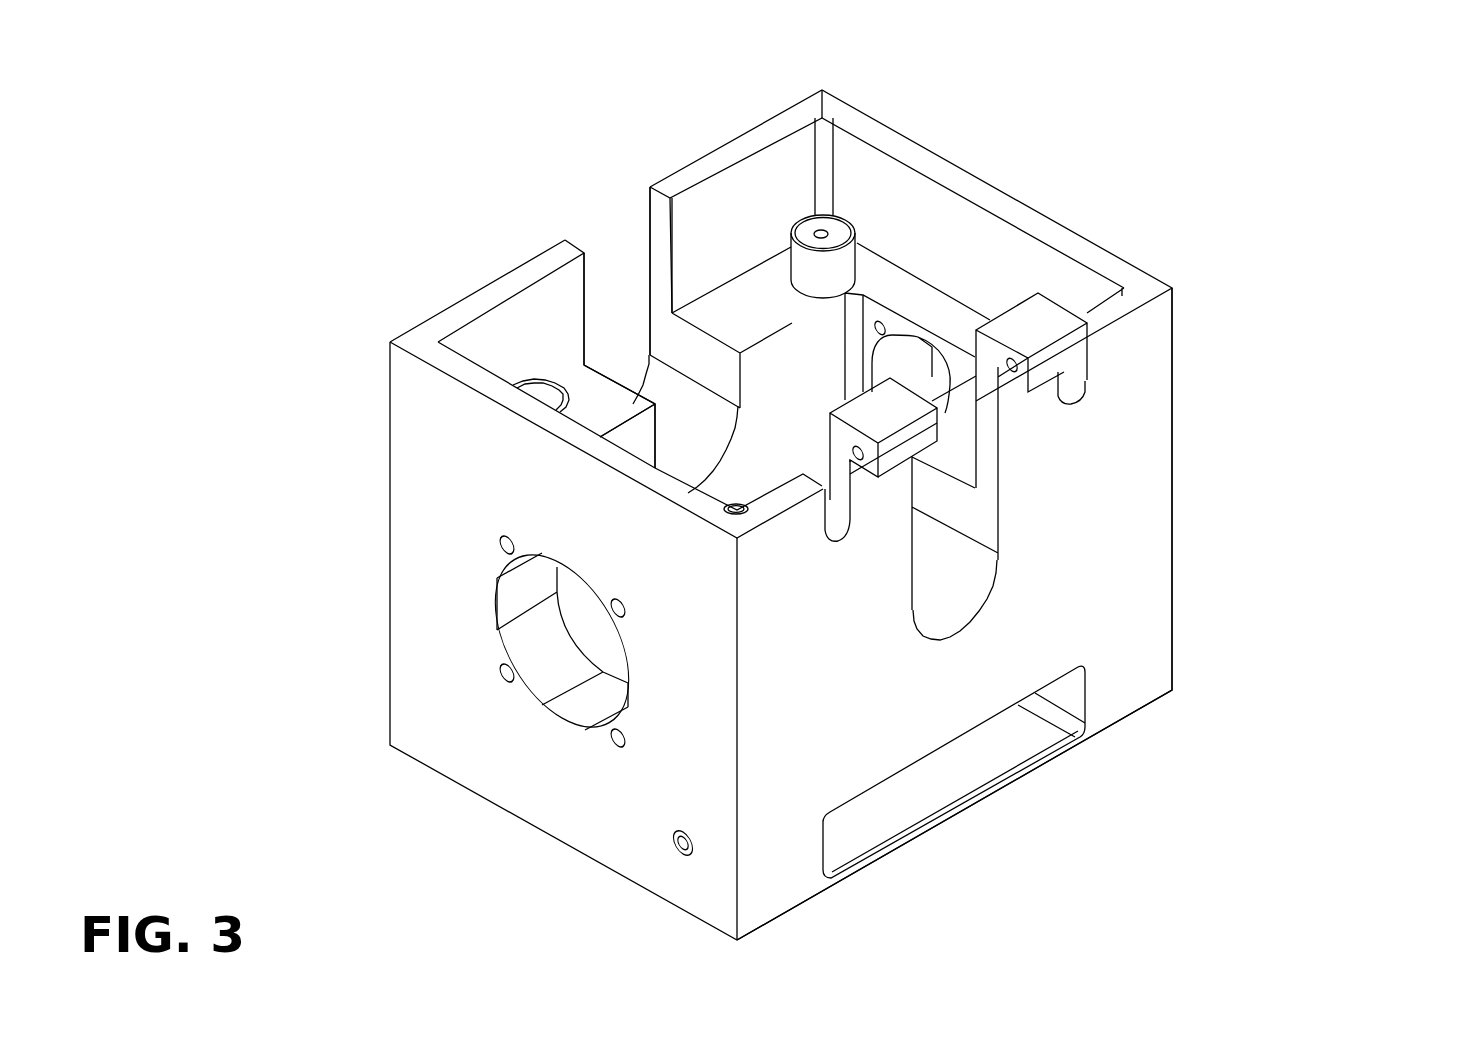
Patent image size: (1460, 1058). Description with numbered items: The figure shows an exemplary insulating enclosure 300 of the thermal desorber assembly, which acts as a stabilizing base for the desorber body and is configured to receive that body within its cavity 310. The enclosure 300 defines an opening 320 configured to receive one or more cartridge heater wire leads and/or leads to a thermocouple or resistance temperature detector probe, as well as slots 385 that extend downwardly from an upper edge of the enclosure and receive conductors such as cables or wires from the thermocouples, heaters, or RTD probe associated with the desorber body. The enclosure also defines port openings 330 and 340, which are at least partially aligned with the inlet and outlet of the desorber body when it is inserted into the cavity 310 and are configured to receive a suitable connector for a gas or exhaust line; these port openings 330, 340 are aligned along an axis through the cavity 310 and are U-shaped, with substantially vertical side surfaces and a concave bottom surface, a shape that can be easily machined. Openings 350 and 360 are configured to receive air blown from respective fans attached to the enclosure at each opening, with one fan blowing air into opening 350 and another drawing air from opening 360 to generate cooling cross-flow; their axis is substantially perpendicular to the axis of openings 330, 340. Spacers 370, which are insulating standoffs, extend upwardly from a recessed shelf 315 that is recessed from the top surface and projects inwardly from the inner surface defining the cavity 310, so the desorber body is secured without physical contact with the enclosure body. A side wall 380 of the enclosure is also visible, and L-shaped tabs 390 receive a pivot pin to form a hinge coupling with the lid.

The insulating enclosure 300 is at (407, 140).
The cavity 310 is at (748, 189).
The recessed shelf 315 is at (598, 392).
The opening 320 is at (994, 769).
The port opening 330 is at (970, 527).
The port opening 340 is at (617, 321).
The opening 350 is at (534, 679).
The opening 360 is at (942, 361).
The spacer 370 is at (829, 231).
The side wall 380 is at (1131, 648).
The slot 385 is at (1084, 398).
The tab 390 is at (1062, 349).